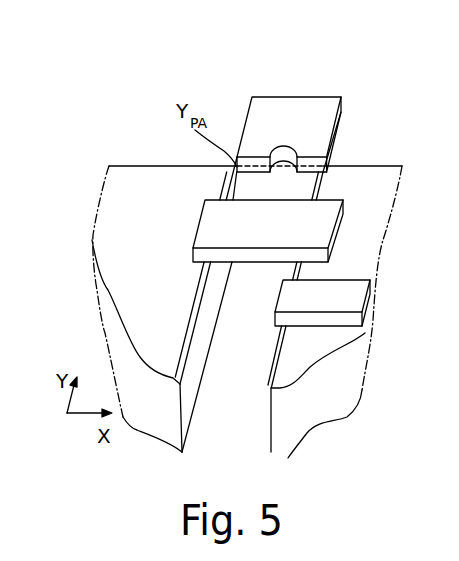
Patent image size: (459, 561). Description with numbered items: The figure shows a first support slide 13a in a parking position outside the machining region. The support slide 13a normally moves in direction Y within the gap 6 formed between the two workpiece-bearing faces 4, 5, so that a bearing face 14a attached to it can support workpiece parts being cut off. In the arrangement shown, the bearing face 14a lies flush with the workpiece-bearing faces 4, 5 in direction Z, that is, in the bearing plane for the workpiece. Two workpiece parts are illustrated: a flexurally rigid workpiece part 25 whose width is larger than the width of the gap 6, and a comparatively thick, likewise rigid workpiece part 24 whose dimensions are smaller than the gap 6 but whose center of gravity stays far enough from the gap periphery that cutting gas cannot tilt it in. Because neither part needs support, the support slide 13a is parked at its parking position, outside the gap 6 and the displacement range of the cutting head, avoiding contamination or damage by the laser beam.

The workpiece-bearing face 4 is at (375, 211).
The workpiece-bearing face 5 is at (160, 188).
The gap 6 is at (258, 331).
The first support slide 13a is at (240, 102).
The bearing face 14a is at (311, 113).
The workpiece part 24 is at (345, 300).
The workpiece part 25 is at (218, 232).